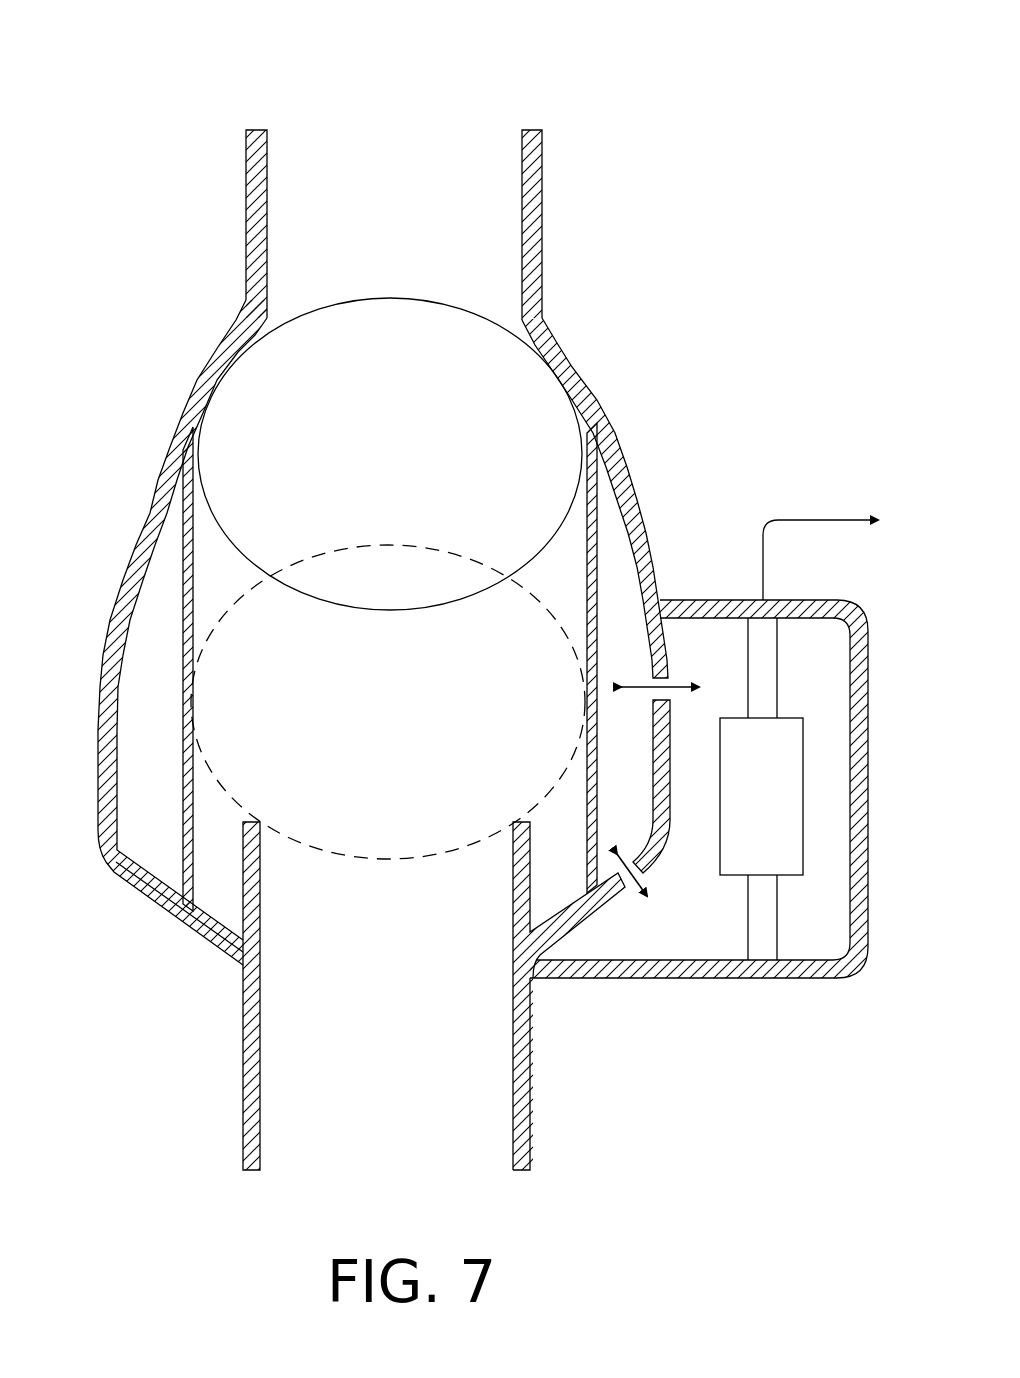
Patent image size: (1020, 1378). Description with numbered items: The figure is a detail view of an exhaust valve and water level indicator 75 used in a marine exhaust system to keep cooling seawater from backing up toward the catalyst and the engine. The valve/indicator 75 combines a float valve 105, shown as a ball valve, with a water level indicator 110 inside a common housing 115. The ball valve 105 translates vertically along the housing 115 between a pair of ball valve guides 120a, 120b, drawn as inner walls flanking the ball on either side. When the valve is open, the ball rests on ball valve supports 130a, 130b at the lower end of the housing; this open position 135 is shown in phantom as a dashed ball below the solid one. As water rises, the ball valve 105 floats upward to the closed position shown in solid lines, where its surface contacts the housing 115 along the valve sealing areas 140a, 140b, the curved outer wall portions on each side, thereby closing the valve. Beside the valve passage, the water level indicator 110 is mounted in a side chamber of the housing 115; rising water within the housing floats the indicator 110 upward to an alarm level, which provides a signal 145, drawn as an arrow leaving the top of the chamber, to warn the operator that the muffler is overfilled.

The exhaust valve and water level indicator 75 is at (239, 58).
The float valve 105 is at (367, 298).
The water level indicator 110 is at (803, 813).
The housing 115 is at (246, 253).
The ball valve guide 120a is at (180, 795).
The ball valve guide 120b is at (600, 560).
The ball valve support 130a is at (243, 877).
The ball valve support 130b is at (513, 870).
The open position 135 is at (235, 605).
The valve sealing area 140a is at (220, 360).
The valve sealing area 140b is at (548, 365).
The signal 145 is at (805, 520).